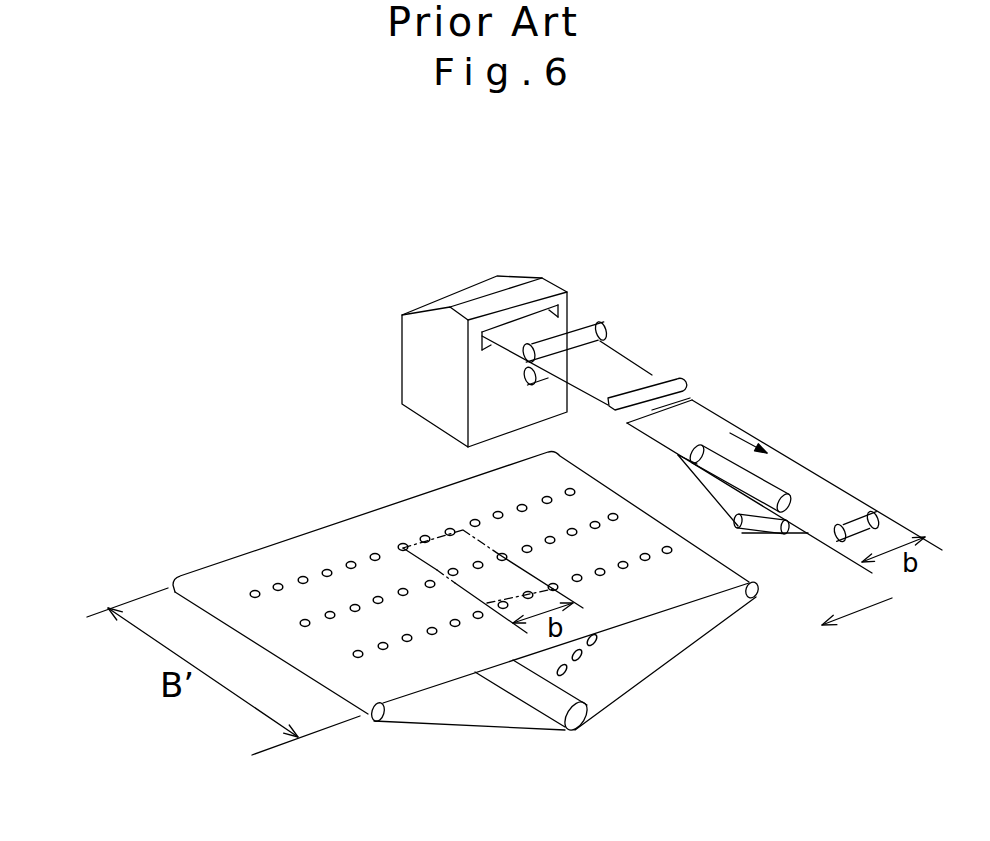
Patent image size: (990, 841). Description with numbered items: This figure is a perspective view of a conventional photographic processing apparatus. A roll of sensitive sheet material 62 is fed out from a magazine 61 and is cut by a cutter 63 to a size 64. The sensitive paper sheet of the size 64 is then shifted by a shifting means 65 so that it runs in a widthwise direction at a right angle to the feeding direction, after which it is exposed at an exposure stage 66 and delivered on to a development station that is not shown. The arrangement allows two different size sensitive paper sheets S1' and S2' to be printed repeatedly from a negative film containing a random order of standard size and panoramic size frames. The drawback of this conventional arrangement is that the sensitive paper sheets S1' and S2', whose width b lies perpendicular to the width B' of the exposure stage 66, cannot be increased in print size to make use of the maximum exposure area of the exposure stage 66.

The magazine 61 is at (542, 280).
The sensitive sheet material 62 is at (548, 327).
The cutter 63 is at (672, 377).
The size 64 is at (692, 420).
The shifting means 65 is at (863, 523).
The exposure stage 66 is at (617, 587).
The sensitive paper sheet S1' is at (493, 658).
The sensitive paper sheet S2' is at (712, 454).